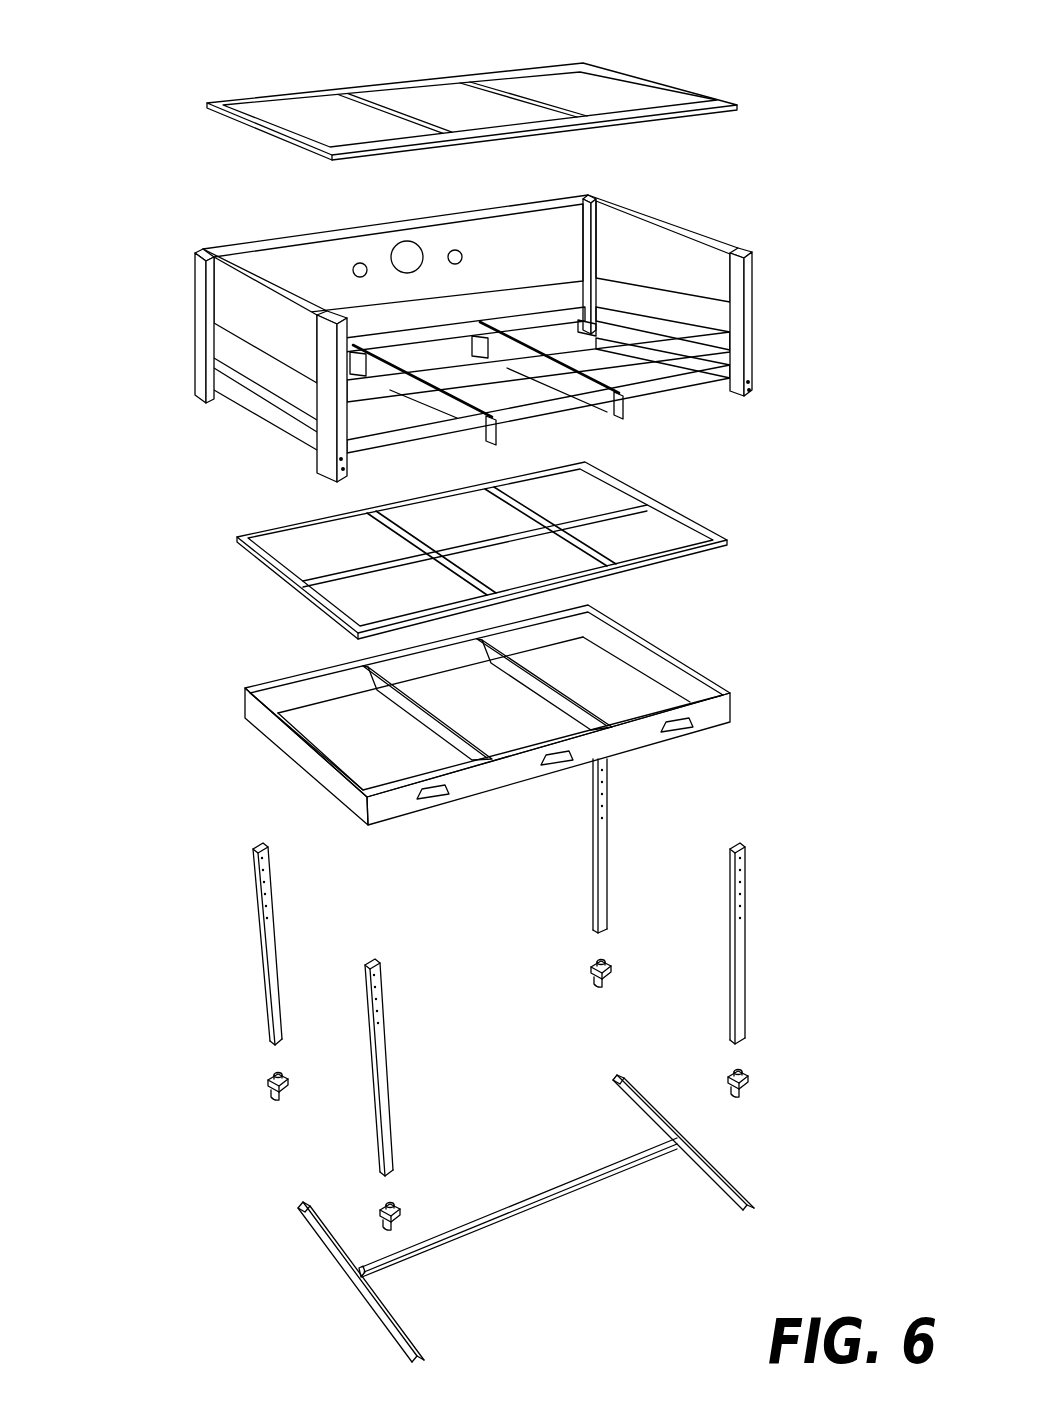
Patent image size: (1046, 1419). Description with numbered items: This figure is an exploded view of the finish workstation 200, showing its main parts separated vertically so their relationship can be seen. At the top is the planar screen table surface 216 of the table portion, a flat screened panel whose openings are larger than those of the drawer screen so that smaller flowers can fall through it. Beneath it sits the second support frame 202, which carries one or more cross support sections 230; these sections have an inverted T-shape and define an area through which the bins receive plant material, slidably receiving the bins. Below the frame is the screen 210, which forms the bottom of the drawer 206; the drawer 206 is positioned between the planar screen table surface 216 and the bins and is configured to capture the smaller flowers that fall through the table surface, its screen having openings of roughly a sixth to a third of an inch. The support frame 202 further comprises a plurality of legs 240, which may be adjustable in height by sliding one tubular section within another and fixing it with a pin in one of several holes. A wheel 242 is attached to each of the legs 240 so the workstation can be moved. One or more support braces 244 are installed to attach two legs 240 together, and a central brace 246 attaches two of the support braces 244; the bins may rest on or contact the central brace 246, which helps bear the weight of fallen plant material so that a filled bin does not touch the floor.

The finish workstation 200 is at (194, 42).
The planar screen table surface 216 is at (745, 106).
The second support frame 202 is at (548, 351).
The cross support sections 230 is at (440, 402).
The screen 210 is at (730, 541).
The drawer 206 is at (733, 708).
The legs 240 is at (746, 952).
The wheels 242 is at (748, 1075).
The support braces 244 is at (745, 1183).
The central brace 246 is at (555, 1204).